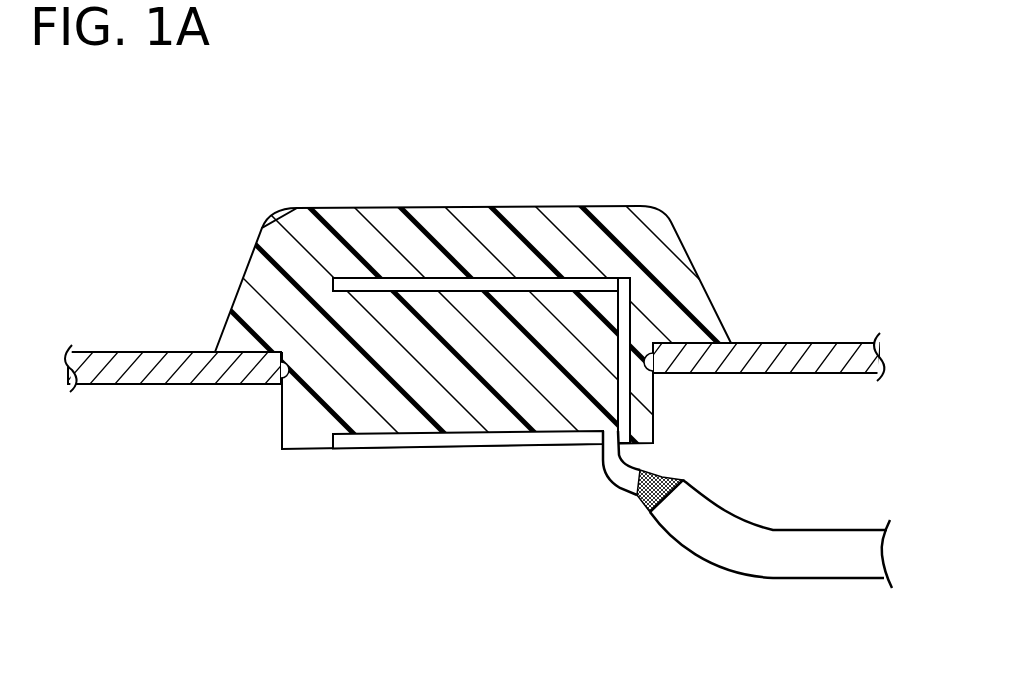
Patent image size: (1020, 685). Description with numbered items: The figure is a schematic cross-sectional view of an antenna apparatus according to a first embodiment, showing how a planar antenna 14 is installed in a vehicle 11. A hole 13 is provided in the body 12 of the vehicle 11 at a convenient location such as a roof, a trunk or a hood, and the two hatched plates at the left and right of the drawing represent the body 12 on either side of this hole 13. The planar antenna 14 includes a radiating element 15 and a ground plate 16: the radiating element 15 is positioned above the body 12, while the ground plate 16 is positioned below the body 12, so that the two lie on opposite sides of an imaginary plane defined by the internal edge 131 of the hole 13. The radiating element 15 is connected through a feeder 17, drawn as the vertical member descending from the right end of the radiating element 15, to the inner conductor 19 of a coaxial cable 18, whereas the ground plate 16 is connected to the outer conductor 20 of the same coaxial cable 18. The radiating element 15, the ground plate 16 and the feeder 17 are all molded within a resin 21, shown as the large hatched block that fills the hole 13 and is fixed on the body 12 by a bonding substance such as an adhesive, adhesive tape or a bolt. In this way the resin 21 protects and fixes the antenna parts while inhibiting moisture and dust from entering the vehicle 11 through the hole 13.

The vehicle 11 is at (90, 318).
The body 12 is at (156, 352).
The hole 13 is at (508, 328).
The internal edge 131 is at (285, 385).
The planar antenna 14 is at (323, 213).
The radiating element 15 is at (435, 278).
The ground plate 16 is at (470, 446).
The feeder 17 is at (638, 312).
The coaxial cable 18 is at (688, 553).
The inner conductor 19 is at (637, 453).
The outer conductor 20 is at (603, 466).
The resin 21 is at (577, 228).